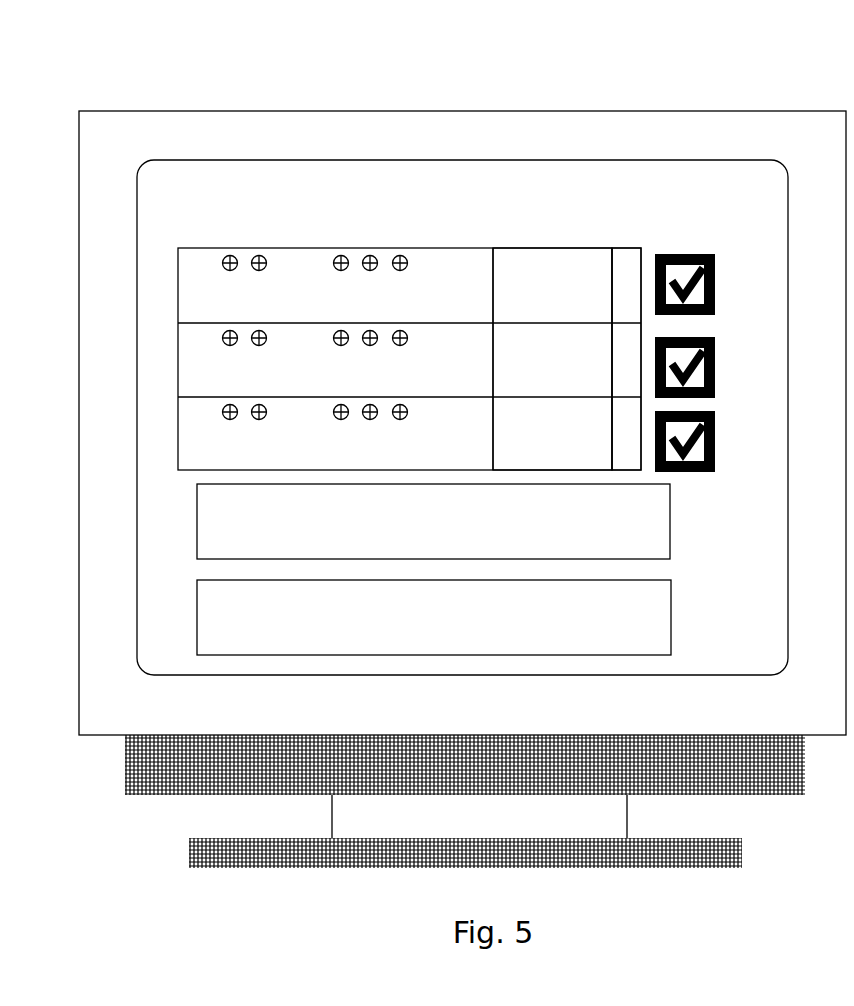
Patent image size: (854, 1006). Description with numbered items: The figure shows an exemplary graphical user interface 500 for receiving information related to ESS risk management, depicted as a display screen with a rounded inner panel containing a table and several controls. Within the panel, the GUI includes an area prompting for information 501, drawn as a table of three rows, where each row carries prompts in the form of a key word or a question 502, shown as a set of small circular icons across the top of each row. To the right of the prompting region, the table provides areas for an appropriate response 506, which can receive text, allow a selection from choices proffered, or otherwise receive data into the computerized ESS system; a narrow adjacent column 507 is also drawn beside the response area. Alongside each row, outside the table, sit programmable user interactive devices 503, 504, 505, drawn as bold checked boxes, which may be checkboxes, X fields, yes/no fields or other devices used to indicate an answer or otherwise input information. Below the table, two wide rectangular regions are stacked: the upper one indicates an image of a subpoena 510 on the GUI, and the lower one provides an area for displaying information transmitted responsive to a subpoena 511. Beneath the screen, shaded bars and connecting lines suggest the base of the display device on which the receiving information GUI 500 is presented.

The graphical user interface 500 is at (125, 89).
The area prompting for information 501 is at (258, 293).
The key word or question 502 is at (399, 255).
The programmable user interactive device 503 is at (706, 284).
The programmable user interactive device 504 is at (706, 367).
The programmable user interactive device 505 is at (706, 441).
The area for an appropriate response 506 is at (553, 293).
The column 507 is at (627, 293).
The image of a subpoena 510 is at (433, 521).
The area for displaying information transmitted responsive to a subpoena 511 is at (434, 617).